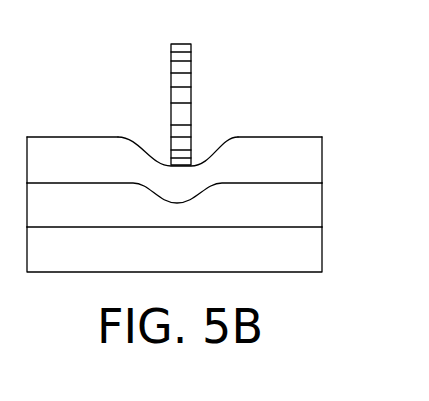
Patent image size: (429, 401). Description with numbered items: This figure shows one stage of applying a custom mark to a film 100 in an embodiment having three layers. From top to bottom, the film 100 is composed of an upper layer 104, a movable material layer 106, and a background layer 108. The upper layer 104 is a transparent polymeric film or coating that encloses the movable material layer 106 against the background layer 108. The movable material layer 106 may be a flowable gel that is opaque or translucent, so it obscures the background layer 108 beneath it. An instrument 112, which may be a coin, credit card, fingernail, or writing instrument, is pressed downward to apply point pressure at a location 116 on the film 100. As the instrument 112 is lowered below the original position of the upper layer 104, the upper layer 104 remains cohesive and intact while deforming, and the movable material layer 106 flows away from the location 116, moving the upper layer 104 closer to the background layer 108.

The film 100 is at (302, 103).
The upper layer 104 is at (279, 167).
The movable material layer 106 is at (279, 212).
The background layer 108 is at (279, 257).
The instrument 112 is at (175, 123).
The location 116 is at (200, 162).